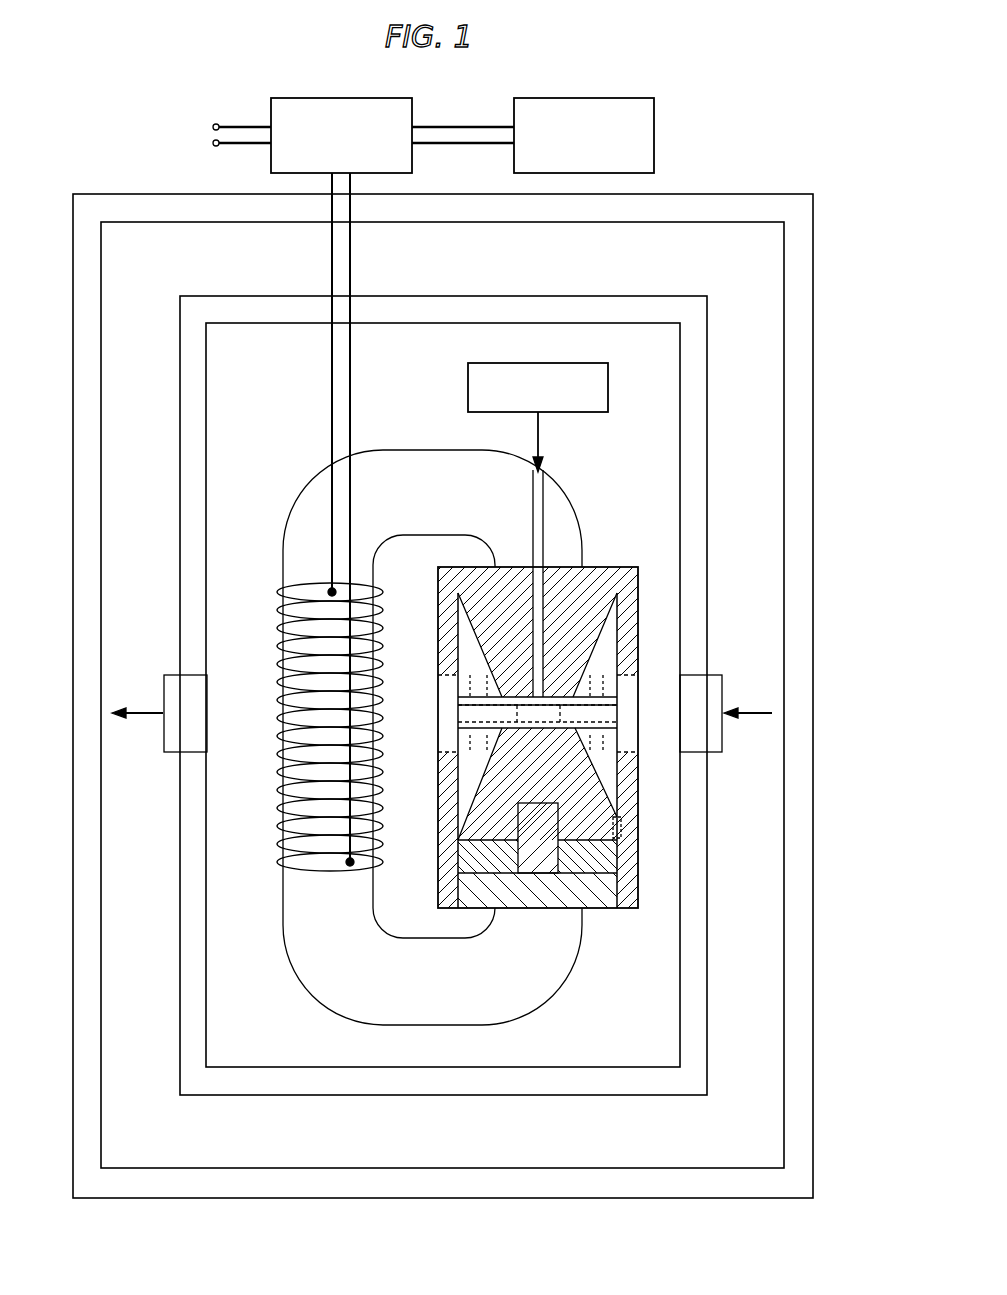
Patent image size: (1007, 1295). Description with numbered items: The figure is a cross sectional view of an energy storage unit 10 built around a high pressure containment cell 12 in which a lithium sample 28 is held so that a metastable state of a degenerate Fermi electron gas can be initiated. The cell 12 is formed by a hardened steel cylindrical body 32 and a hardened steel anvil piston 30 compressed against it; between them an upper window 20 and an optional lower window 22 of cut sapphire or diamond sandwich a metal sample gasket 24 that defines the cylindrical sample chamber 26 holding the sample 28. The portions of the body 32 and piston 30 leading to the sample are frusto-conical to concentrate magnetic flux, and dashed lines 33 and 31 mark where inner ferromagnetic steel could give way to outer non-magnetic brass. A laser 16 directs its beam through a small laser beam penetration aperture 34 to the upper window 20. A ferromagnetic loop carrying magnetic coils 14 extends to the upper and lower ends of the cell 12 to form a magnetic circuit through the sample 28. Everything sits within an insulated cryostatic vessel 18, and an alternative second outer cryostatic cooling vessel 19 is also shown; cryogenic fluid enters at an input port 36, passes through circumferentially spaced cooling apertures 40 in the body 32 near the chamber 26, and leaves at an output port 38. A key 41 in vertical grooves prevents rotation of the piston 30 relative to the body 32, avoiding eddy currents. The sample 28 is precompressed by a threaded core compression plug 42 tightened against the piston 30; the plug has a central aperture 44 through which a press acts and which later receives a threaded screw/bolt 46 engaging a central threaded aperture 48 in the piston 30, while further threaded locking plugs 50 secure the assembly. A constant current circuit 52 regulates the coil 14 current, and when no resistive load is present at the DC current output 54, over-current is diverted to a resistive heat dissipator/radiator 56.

The energy storage unit 10 is at (196, 276).
The high pressure containment cell 12 is at (604, 522).
The magnetic coils 14 is at (277, 737).
The laser 16 is at (608, 385).
The cryostatic vessel 18 is at (180, 417).
The second outer cryostatic cooling vessel 19 is at (73, 352).
The upper window 20 is at (617, 699).
The lower window 22 is at (617, 726).
The metal sample gasket 24 is at (560, 713).
The sample chamber 26 is at (458, 702).
The lithium sample 28 is at (543, 712).
The anvil piston 30 is at (468, 775).
The dashed lines 31 is at (503, 820).
The cylindrical body 32 is at (438, 592).
The dashed lines 33 is at (588, 602).
The laser beam penetration aperture 34 is at (533, 520).
The input port 36 is at (722, 700).
The output port 38 is at (172, 675).
The cooling apertures 40 is at (470, 660).
The key 41 is at (621, 825).
The core compression plug 42 is at (617, 848).
The central aperture 44 is at (617, 870).
The threaded screw/bolt 46 is at (438, 905).
The central threaded aperture 48 is at (520, 858).
The threaded locking plugs 50 is at (617, 895).
The constant current circuit 52 is at (305, 98).
The DC current output 54 is at (209, 113).
The heat dissipator/radiator 56 is at (625, 98).